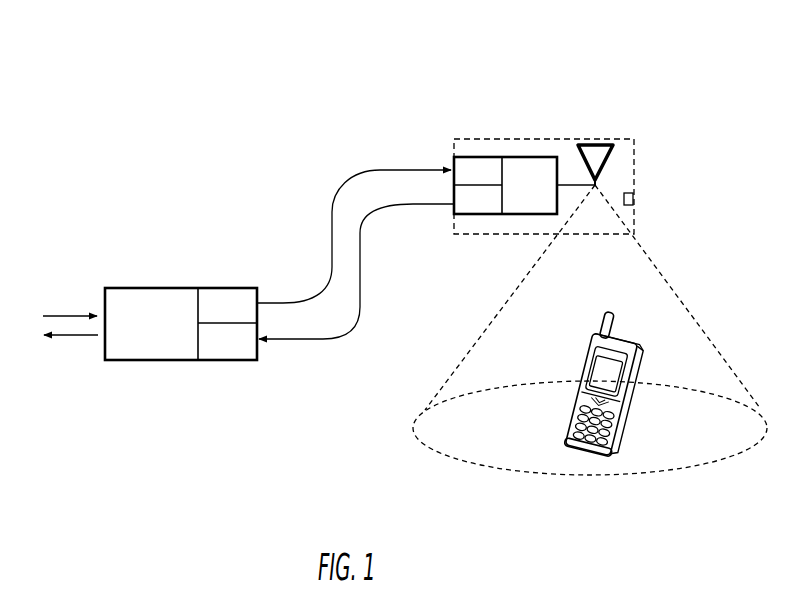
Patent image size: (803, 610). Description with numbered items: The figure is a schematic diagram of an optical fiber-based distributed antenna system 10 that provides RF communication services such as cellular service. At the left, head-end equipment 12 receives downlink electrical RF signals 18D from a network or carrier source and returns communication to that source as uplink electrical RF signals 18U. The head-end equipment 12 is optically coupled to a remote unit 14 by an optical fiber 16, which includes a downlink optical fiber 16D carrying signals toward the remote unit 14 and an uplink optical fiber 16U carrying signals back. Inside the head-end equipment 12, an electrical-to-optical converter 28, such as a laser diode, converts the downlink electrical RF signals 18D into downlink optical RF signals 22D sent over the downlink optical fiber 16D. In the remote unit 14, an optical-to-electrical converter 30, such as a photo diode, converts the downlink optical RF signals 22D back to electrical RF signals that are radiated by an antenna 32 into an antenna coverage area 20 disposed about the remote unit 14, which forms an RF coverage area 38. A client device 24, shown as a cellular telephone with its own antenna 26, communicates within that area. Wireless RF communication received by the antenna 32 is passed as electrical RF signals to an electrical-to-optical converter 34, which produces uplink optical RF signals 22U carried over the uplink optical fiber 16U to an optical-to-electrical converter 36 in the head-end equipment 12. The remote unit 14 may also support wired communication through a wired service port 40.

The optical fiber-based distributed antenna system 10 is at (431, 89).
The head-end equipment 12 is at (185, 322).
The remote unit 14 is at (562, 179).
The optical fiber 16 is at (355, 237).
The downlink optical fiber 16D is at (354, 222).
The uplink optical fiber 16U is at (356, 280).
The downlink electrical RF signals 18D is at (64, 311).
The uplink electrical RF signals 18U is at (66, 338).
The antenna coverage area 20 is at (658, 257).
The downlink optical RF signals 22D is at (330, 209).
The uplink optical RF signals 22U is at (359, 318).
The client device 24 is at (601, 359).
The antenna 26 is at (588, 299).
The electrical-to-optical converter 28 is at (218, 287).
The optical-to-electrical converter 30 is at (473, 156).
The antenna 32 is at (599, 169).
The electrical-to-optical converter 34 is at (485, 215).
The optical-to-electrical converter 36 is at (223, 362).
The RF coverage area 38 is at (368, 453).
The wired service port 40 is at (634, 199).